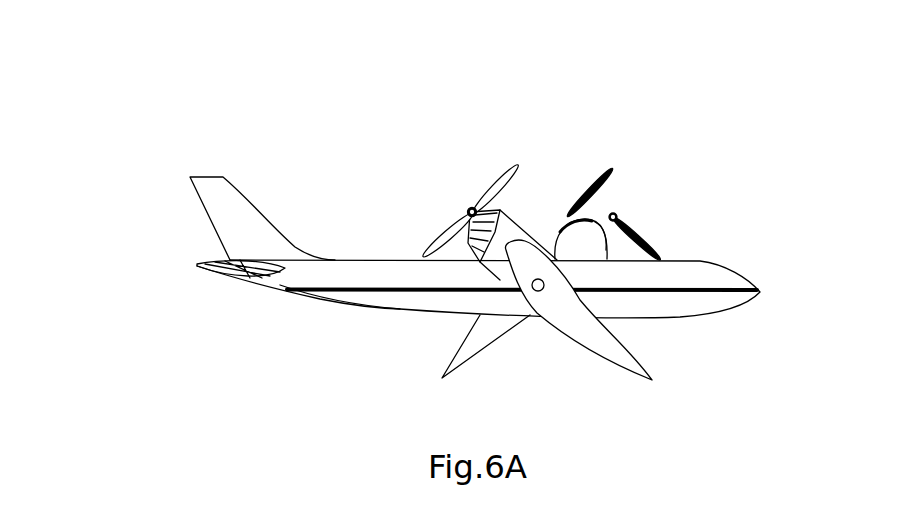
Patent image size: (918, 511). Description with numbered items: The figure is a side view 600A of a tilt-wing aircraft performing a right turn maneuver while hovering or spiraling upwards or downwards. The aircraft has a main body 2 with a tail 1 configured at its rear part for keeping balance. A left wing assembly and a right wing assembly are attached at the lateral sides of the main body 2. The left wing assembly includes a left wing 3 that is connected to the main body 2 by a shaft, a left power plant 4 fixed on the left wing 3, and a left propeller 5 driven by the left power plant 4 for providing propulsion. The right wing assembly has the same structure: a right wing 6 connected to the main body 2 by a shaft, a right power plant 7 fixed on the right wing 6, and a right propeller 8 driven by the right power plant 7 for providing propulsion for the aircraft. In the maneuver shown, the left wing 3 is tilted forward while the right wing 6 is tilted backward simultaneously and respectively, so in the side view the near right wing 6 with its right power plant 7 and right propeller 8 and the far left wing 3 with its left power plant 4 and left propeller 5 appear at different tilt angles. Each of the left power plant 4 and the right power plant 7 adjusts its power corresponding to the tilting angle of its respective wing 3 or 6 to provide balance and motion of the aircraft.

The side view 600A is at (213, 60).
The tail 1 is at (222, 197).
The main body 2 is at (345, 277).
The left wing 3 is at (470, 345).
The left power plant 4 is at (573, 213).
The left propeller 5 is at (663, 244).
The right wing 6 is at (618, 353).
The right power plant 7 is at (525, 232).
The right propeller 8 is at (478, 193).